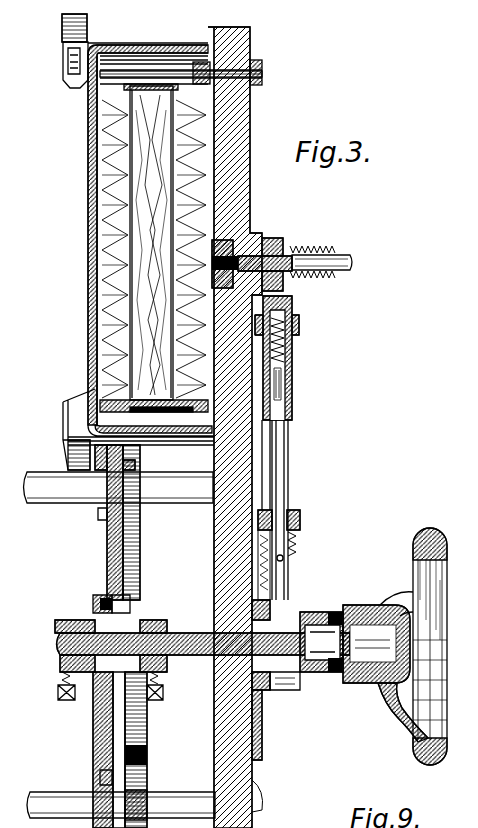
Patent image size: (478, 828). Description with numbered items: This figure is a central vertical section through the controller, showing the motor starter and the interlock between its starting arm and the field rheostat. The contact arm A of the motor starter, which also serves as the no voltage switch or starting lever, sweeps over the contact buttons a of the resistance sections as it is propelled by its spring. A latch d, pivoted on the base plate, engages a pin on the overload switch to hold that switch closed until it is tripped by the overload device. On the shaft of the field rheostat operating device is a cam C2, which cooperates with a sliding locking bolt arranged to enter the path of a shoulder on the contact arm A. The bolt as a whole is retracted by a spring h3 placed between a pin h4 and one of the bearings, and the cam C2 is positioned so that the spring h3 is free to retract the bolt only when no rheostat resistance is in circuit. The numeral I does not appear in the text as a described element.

The contact buttons a is at (264, 81).
The contact arm A is at (276, 236).
The casing I is at (92, 243).
The latch d is at (151, 242).
The spring h3 is at (310, 540).
The pin h4 is at (284, 558).
The cam C2 is at (283, 700).